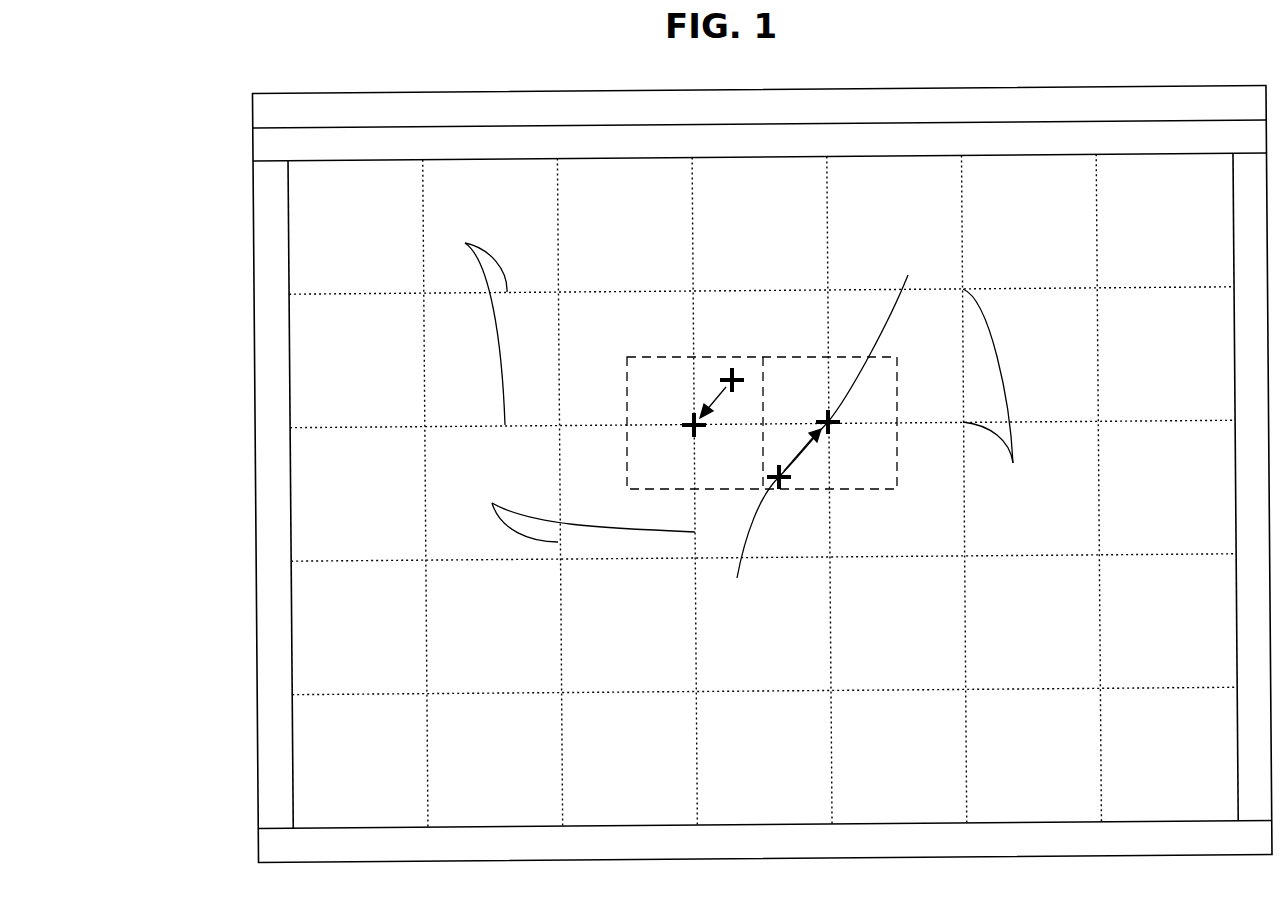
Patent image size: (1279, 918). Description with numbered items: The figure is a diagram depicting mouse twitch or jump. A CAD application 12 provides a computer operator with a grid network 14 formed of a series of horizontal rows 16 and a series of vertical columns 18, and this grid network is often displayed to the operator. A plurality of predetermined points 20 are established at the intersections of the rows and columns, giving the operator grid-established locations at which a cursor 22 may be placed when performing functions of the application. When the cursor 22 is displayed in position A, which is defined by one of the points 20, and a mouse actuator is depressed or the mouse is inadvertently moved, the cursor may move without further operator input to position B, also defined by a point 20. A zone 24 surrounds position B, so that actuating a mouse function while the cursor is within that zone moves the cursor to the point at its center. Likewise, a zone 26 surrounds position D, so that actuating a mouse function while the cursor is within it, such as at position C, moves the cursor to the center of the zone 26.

The CAD application 12 is at (185, 125).
The grid network 14 is at (220, 292).
The horizontal rows 16 is at (588, 510).
The vertical columns 18 is at (469, 328).
The predetermined points 20 is at (690, 430).
The cursor 22 is at (817, 445).
The zone 24 is at (898, 440).
The zone 26 is at (677, 357).